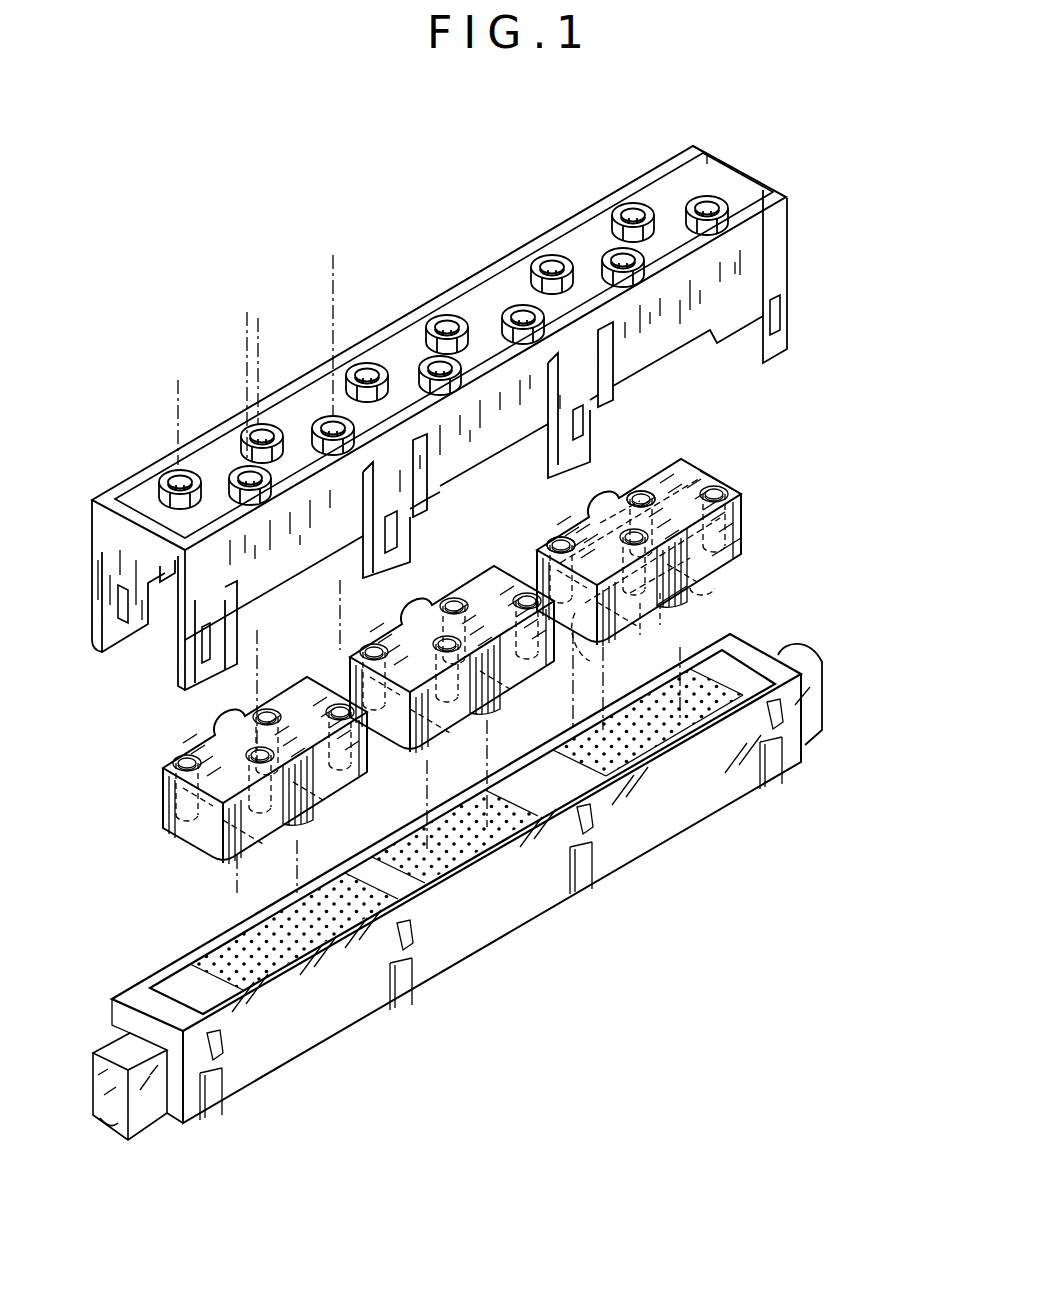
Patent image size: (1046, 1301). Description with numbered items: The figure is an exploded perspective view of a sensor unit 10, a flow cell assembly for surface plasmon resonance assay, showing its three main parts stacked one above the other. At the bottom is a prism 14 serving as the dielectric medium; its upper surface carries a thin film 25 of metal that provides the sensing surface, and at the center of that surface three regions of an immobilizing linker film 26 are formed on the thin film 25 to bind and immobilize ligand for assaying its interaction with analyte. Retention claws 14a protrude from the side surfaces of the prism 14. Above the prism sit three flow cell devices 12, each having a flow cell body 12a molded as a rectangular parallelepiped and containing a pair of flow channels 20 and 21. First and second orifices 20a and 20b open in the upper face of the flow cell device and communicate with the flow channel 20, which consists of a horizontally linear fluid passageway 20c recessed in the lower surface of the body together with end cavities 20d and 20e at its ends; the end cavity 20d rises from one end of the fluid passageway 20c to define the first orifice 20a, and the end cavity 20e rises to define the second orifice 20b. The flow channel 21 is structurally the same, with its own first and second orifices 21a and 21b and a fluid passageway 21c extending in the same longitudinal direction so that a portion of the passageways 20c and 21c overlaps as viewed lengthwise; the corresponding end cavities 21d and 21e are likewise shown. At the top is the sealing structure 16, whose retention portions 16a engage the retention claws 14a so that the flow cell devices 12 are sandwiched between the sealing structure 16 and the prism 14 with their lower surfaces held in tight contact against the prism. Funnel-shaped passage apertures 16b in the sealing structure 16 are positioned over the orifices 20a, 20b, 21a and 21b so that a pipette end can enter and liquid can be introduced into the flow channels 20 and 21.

The sensor unit 10 is at (200, 290).
The flow cell device 12 is at (720, 465).
The flow cell body 12a is at (727, 564).
The prism 14 is at (500, 950).
The retention claw 14a is at (785, 724).
The sealing structure 16 is at (808, 252).
The retention portion 16a is at (126, 630).
The passage aperture 16b is at (250, 465).
The flow channel 20 is at (752, 517).
The first orifice 20a is at (738, 492).
The second orifice 20b is at (672, 602).
The fluid passageway 20c is at (705, 592).
The end cavity 20d is at (742, 546).
The end cavity 20e is at (649, 634).
The flow channel 21 is at (160, 805).
The first orifice 21a is at (641, 487).
The second orifice 21b is at (554, 543).
The fluid passageway 21c is at (578, 531).
The semicircular boss 21d is at (672, 473).
The guide projection 21e is at (586, 662).
The thin film 25 is at (203, 926).
The immobilizing linker film 26 is at (642, 712).